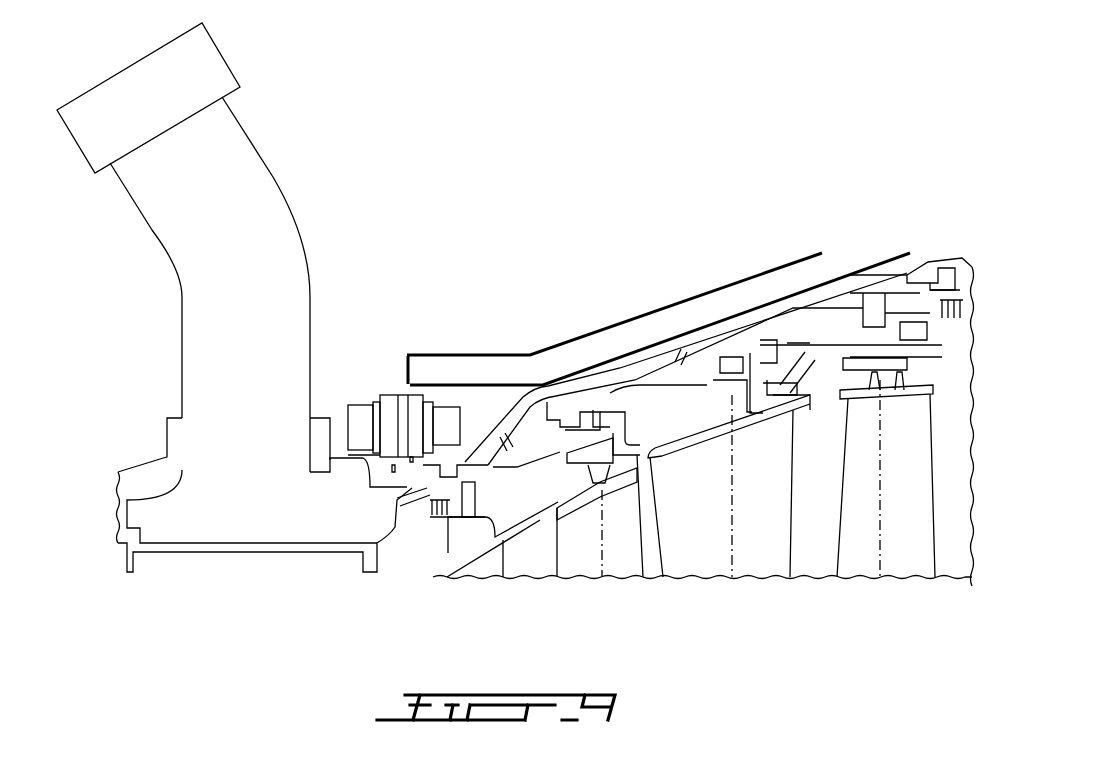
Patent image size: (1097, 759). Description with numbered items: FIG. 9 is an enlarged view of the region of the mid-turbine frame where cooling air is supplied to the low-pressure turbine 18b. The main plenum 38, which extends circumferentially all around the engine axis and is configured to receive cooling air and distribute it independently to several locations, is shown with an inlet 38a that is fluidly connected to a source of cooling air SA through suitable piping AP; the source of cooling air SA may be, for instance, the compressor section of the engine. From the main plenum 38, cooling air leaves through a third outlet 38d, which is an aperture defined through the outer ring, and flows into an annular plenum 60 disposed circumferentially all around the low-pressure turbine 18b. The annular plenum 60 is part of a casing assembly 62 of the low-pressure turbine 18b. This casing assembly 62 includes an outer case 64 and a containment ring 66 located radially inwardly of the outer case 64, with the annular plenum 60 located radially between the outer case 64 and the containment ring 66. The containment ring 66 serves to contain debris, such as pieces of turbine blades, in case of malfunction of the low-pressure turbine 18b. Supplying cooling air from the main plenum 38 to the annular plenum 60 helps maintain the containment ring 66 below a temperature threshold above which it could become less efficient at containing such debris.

The source of cooling air SA is at (162, 95).
The piping AP is at (273, 177).
The main plenum 38 is at (221, 523).
The inlet 38a is at (276, 446).
The third outlet 38d is at (383, 511).
The low-pressure turbine 18b is at (965, 223).
The outer case 64 is at (490, 428).
The casing assembly 62 is at (553, 490).
The containment ring 66 is at (720, 353).
The annular plenum 60 is at (827, 335).